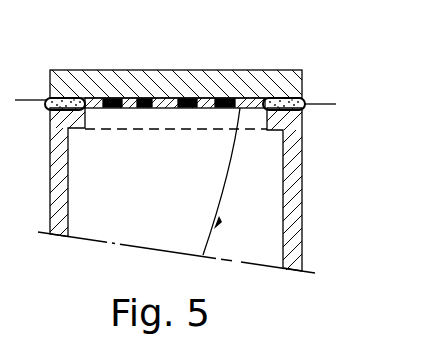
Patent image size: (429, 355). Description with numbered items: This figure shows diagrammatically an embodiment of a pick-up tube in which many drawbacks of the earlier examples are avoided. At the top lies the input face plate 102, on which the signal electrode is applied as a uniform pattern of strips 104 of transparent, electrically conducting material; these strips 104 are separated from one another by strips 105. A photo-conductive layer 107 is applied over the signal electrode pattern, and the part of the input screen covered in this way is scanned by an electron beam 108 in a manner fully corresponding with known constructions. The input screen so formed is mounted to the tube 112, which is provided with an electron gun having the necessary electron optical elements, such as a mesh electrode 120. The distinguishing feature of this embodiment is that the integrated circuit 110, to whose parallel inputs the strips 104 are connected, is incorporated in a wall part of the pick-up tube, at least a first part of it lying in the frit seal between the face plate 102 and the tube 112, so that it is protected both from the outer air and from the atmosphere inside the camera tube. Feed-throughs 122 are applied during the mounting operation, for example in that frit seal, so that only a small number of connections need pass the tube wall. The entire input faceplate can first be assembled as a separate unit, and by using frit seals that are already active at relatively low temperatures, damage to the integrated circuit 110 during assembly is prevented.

The input face plate 102 is at (180, 81).
The strips 104 is at (143, 98).
The strips 105 is at (195, 100).
The photo-conductive layer 107 is at (182, 110).
The electron beam 108 is at (216, 232).
The integrated circuit 110 is at (67, 98).
The tube 112 is at (291, 234).
The mesh electrode 120 is at (170, 131).
The feed-throughs 122 is at (27, 103).